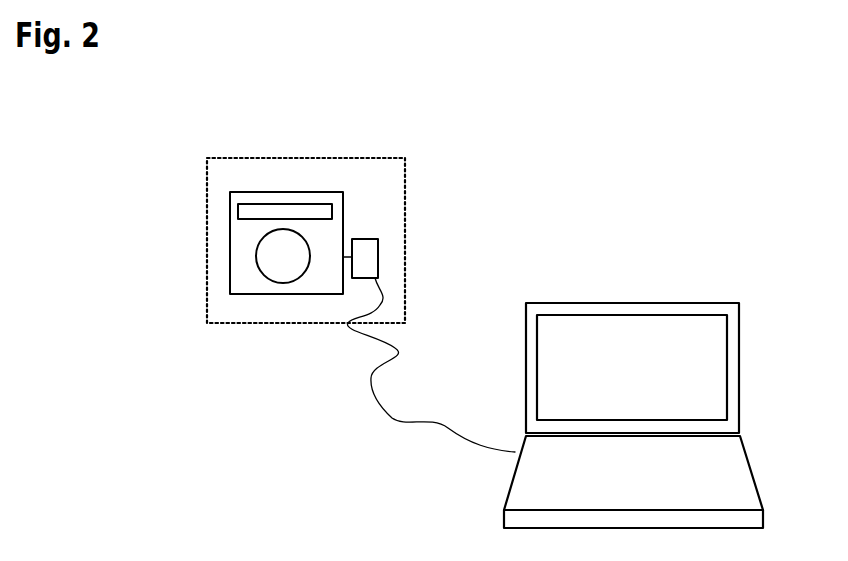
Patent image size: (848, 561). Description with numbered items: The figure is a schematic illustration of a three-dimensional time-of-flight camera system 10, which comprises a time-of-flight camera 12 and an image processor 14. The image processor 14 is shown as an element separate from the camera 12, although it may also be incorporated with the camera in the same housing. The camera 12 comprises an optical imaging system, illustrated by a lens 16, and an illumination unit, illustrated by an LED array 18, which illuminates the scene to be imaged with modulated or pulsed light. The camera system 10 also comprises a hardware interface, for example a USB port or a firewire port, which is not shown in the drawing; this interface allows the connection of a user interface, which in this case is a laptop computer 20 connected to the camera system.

The 3D TOF camera system 10 is at (384, 152).
The 3D TOF camera 12 is at (264, 296).
The image processor 14 is at (378, 249).
The lens 16 is at (295, 290).
The LED array 18 is at (290, 205).
The laptop computer 20 is at (553, 303).